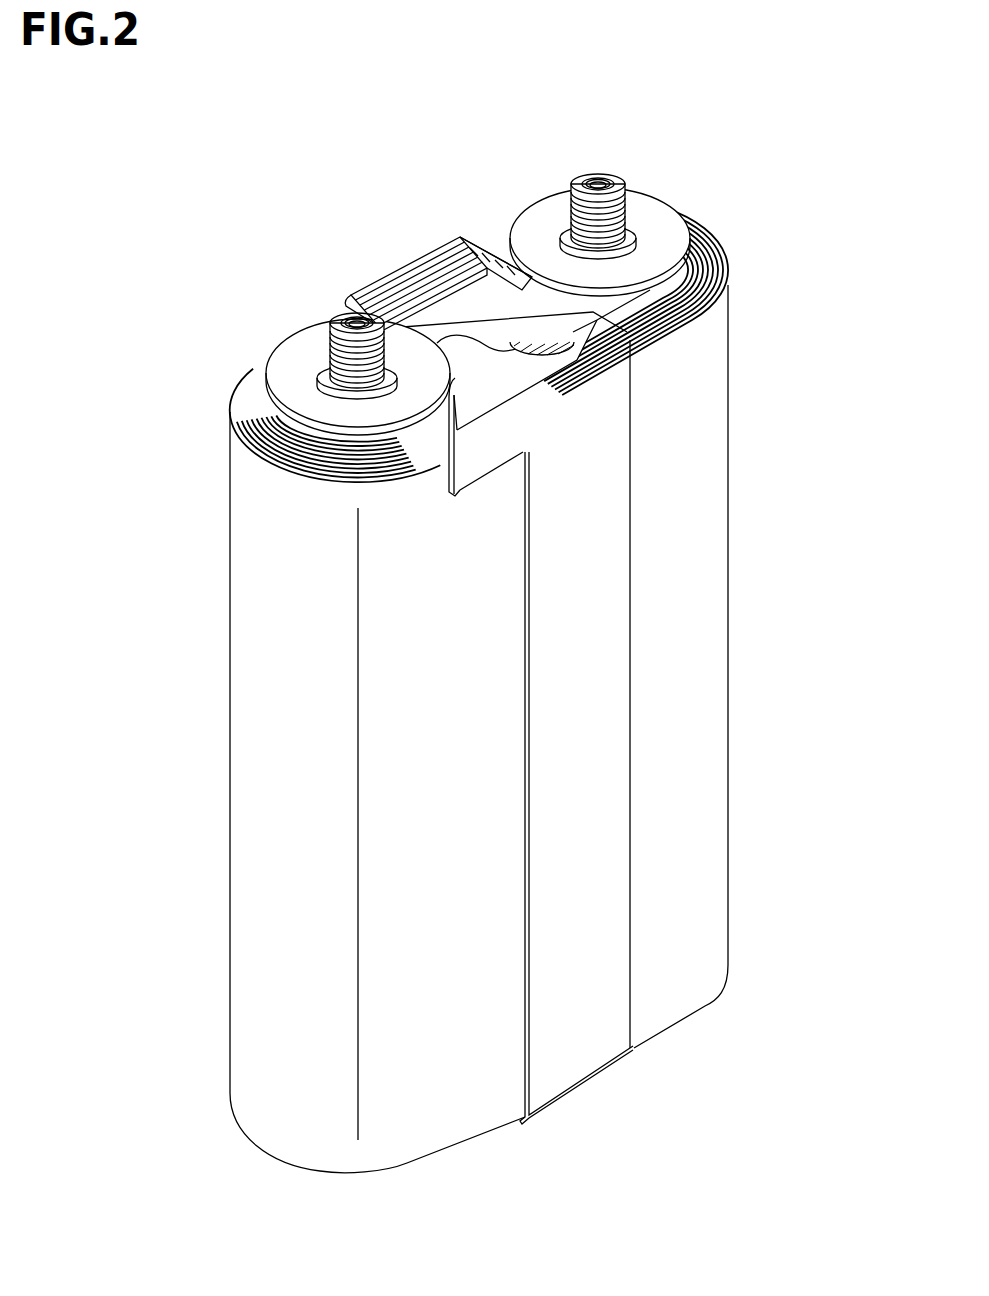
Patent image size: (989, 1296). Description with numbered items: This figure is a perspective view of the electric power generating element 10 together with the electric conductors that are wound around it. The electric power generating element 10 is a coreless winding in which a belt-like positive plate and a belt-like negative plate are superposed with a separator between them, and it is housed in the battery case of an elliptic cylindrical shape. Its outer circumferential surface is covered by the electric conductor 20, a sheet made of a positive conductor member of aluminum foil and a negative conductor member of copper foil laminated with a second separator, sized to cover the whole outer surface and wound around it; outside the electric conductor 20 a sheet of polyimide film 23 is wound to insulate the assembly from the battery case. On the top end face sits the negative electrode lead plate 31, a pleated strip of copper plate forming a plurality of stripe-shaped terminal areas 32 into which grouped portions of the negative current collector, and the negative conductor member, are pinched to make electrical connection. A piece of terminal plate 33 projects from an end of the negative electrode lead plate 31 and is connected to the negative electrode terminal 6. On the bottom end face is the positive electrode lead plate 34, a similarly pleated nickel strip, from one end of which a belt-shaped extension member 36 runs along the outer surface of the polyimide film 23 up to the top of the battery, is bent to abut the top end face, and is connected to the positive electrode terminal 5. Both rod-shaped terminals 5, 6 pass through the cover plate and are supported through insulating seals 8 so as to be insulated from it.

The positive electrode terminal 5 is at (336, 322).
The negative electrode terminal 6 is at (592, 175).
The insulating seal 8 is at (317, 373).
The electric power generating element 10 is at (703, 260).
The electric conductor 20 is at (724, 262).
The polyimide film 23 is at (728, 448).
The negative electrode lead plate 31 is at (543, 312).
The terminal area 32 is at (397, 282).
The terminal plate 33 is at (483, 238).
The positive electrode lead plate 34 is at (610, 607).
The extension member 36 is at (462, 397).